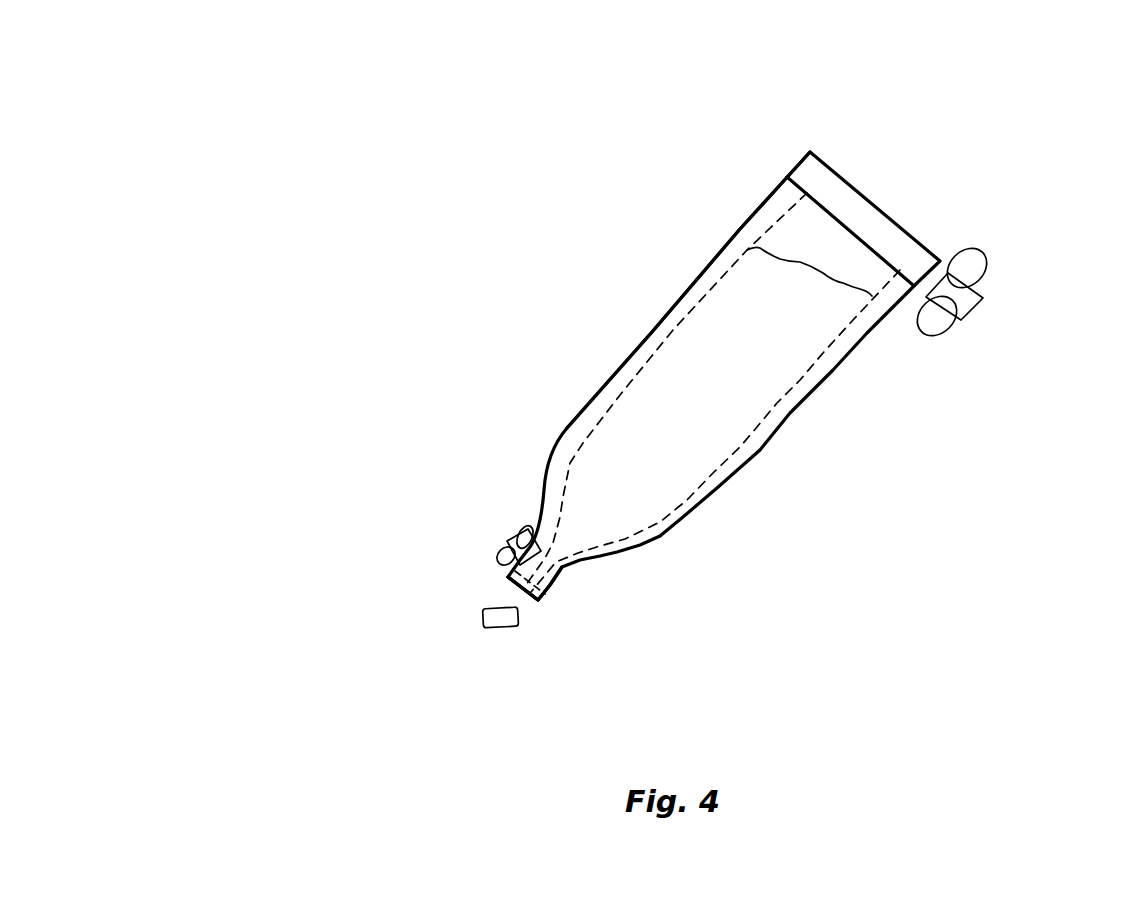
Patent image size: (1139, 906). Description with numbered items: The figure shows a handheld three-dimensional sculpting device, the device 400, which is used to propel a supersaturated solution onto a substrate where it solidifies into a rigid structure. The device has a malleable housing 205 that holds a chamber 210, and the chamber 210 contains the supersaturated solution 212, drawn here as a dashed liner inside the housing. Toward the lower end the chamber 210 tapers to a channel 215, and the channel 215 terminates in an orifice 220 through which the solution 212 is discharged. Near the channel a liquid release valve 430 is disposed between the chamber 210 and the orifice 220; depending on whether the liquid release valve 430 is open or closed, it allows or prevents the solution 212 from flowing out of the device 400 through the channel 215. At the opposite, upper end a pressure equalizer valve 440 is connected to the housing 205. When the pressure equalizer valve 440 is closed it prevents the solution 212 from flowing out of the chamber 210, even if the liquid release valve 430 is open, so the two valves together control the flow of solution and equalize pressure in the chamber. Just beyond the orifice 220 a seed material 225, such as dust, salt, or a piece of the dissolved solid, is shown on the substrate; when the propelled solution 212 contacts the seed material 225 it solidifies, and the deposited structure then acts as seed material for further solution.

The 3D device 400 is at (333, 117).
The malleable housing 205 is at (677, 540).
The chamber 210 is at (618, 448).
The supersaturated solution 212 is at (698, 343).
The channel 215 is at (562, 565).
The orifice 220 is at (528, 592).
The seed material 225 is at (500, 620).
The liquid release valve 430 is at (513, 537).
The pressure equalizer valve 440 is at (965, 313).